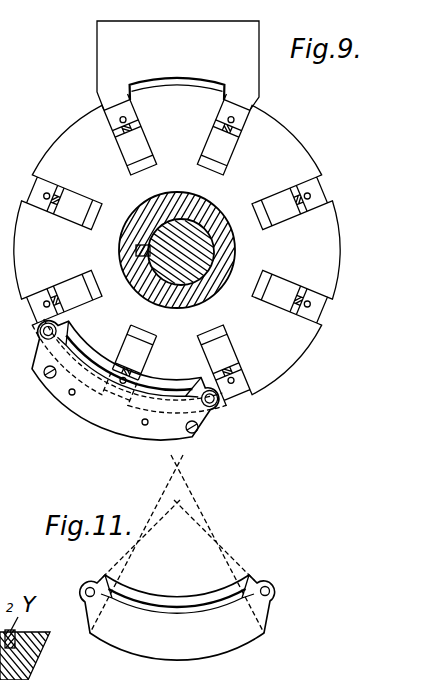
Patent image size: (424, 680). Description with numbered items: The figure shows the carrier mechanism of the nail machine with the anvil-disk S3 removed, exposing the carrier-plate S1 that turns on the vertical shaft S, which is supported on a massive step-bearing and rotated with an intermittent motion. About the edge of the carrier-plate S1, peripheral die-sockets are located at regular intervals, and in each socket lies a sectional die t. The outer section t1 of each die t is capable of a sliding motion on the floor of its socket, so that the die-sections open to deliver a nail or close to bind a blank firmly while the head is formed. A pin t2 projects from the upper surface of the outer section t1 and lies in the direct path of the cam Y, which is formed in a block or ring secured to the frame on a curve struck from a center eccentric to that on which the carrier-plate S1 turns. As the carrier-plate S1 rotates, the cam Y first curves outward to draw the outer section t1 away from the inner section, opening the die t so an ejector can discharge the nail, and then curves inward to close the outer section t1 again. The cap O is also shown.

In FIG. 9, the cap O is at (178, 65).
In FIG. 9, the vertical shaft S is at (177, 227).
In FIG. 9, the carrier-plate S1 is at (63, 128).
In FIG. 9, the anvil-disk S3 is at (190, 298).
In FIG. 9, the sectional die t is at (147, 144).
In FIG. 9, the outer section of the die t1 is at (137, 116).
In FIG. 9, the pin t2 is at (110, 431).
In FIG. 9, the cam Y is at (92, 415).
In FIG. 11, the cam Y is at (247, 570).